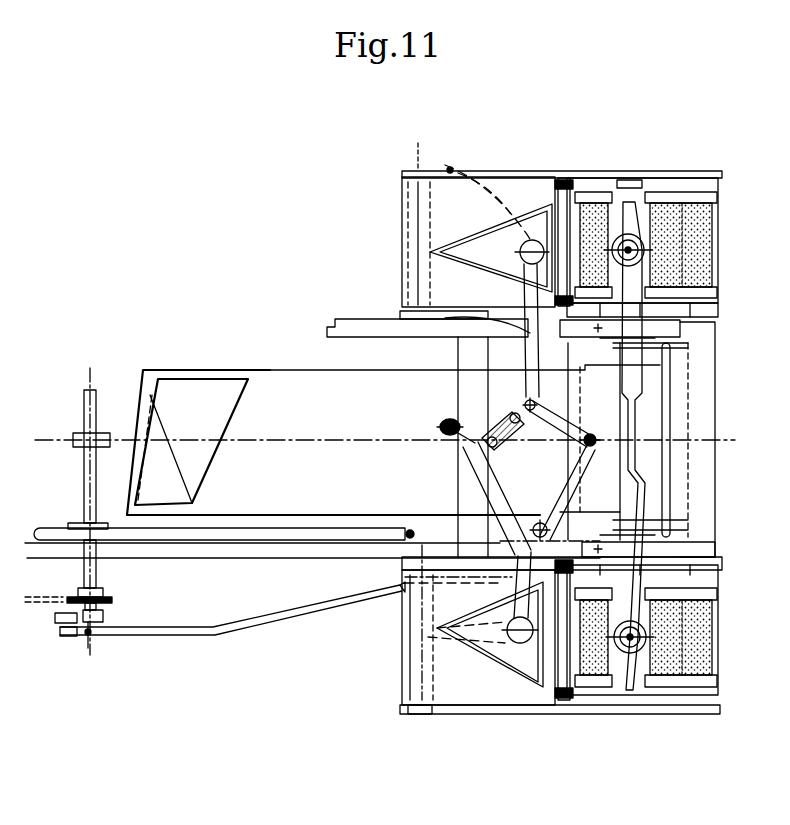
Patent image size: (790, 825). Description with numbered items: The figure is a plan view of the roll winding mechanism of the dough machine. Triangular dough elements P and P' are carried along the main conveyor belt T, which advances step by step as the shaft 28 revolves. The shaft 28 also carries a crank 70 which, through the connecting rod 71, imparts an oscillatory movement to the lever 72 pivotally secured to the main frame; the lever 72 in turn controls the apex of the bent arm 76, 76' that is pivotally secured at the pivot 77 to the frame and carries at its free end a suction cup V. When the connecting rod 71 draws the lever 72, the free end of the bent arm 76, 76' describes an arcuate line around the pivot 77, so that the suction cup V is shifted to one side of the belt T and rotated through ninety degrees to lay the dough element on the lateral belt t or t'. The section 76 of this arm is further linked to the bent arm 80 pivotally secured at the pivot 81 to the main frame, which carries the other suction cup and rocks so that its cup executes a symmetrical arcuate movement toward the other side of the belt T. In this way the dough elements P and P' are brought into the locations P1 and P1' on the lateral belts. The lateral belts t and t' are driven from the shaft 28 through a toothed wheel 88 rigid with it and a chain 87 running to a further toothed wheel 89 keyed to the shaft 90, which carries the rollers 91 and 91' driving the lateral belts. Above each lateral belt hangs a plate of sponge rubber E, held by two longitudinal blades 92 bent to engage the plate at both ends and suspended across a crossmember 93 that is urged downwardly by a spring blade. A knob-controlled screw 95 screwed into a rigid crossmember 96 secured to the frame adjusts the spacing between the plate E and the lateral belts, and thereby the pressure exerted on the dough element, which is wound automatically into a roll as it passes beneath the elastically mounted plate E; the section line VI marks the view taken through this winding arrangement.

The shaft 28 is at (84, 475).
The crank 70 is at (80, 628).
The connecting rod 71 is at (283, 615).
The lever 72 is at (578, 485).
The bent arm section 76 is at (505, 446).
The bent arm section 76' is at (423, 293).
The pivot 77 is at (483, 420).
The bent arm 80 is at (490, 487).
The pivot 81 is at (448, 435).
The chain 87 is at (210, 541).
The toothed wheel 88 is at (47, 540).
The toothed wheel 89 is at (405, 541).
The shaft 90 is at (410, 340).
The roller 91 is at (501, 225).
The roller 91' is at (520, 629).
The longitudinal blades 92 is at (700, 577).
The crossmember 93 is at (625, 700).
The knob-controlled screw 95 is at (615, 242).
The rigid crossmember 96 is at (682, 290).
The plate of sponge rubber E is at (670, 223).
The triangular dough element P is at (198, 417).
The triangular dough element P' is at (149, 407).
The dough element location P1 is at (491, 202).
The dough element location P1' is at (490, 677).
The conveyor belt T is at (342, 450).
The suction cup V is at (535, 242).
The section line VI is at (742, 612).
The lateral conveyor belt t is at (425, 203).
The lateral conveyor belt t' is at (452, 674).